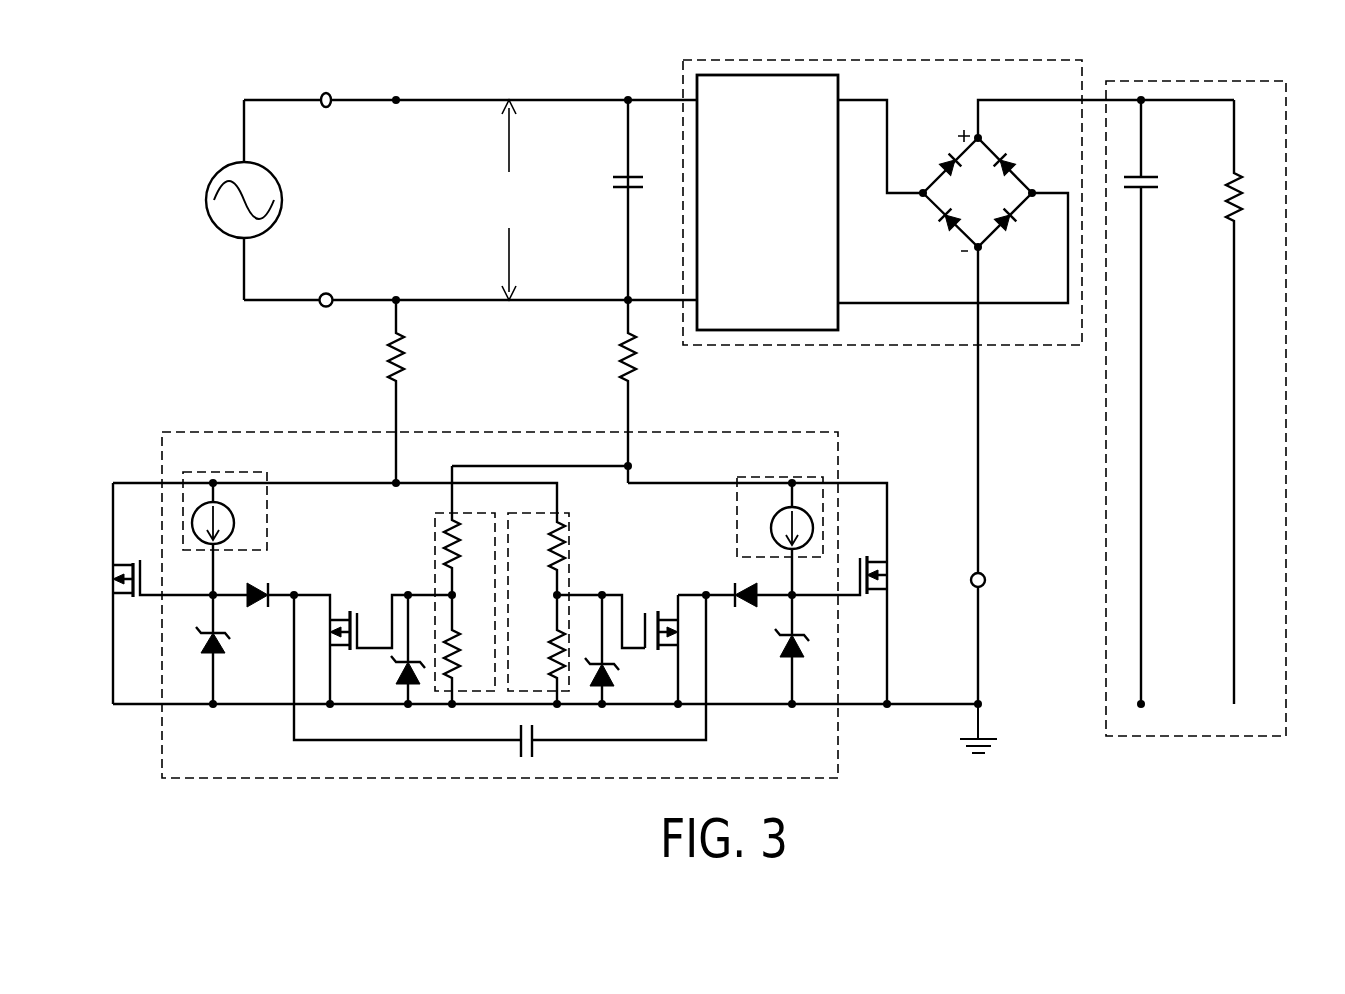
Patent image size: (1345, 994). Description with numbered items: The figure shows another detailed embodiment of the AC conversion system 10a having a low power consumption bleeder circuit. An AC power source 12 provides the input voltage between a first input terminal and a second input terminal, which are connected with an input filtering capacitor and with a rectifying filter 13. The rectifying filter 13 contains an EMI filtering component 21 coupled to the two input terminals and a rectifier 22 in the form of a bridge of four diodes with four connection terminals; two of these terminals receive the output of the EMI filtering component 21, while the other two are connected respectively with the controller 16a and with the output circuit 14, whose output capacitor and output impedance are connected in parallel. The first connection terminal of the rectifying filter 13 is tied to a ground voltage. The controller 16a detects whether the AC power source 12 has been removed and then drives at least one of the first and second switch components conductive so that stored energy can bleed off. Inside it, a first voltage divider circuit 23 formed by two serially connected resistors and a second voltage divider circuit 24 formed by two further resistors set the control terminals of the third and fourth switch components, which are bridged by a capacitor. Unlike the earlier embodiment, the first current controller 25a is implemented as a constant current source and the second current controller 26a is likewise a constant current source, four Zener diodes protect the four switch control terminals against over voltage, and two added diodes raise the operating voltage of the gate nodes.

The AC conversion system 10a is at (202, 70).
The AC power source 12 is at (223, 167).
The rectifying filter 13 is at (1083, 78).
The output circuit 14 is at (1286, 133).
The controller 16a is at (213, 778).
The EMI filtering component 21 is at (697, 85).
The rectifier 22 is at (951, 162).
The first voltage divider circuit 23 is at (468, 692).
The second voltage divider circuit 24 is at (540, 692).
The first current controller 25a is at (267, 511).
The second current controller 26a is at (737, 513).